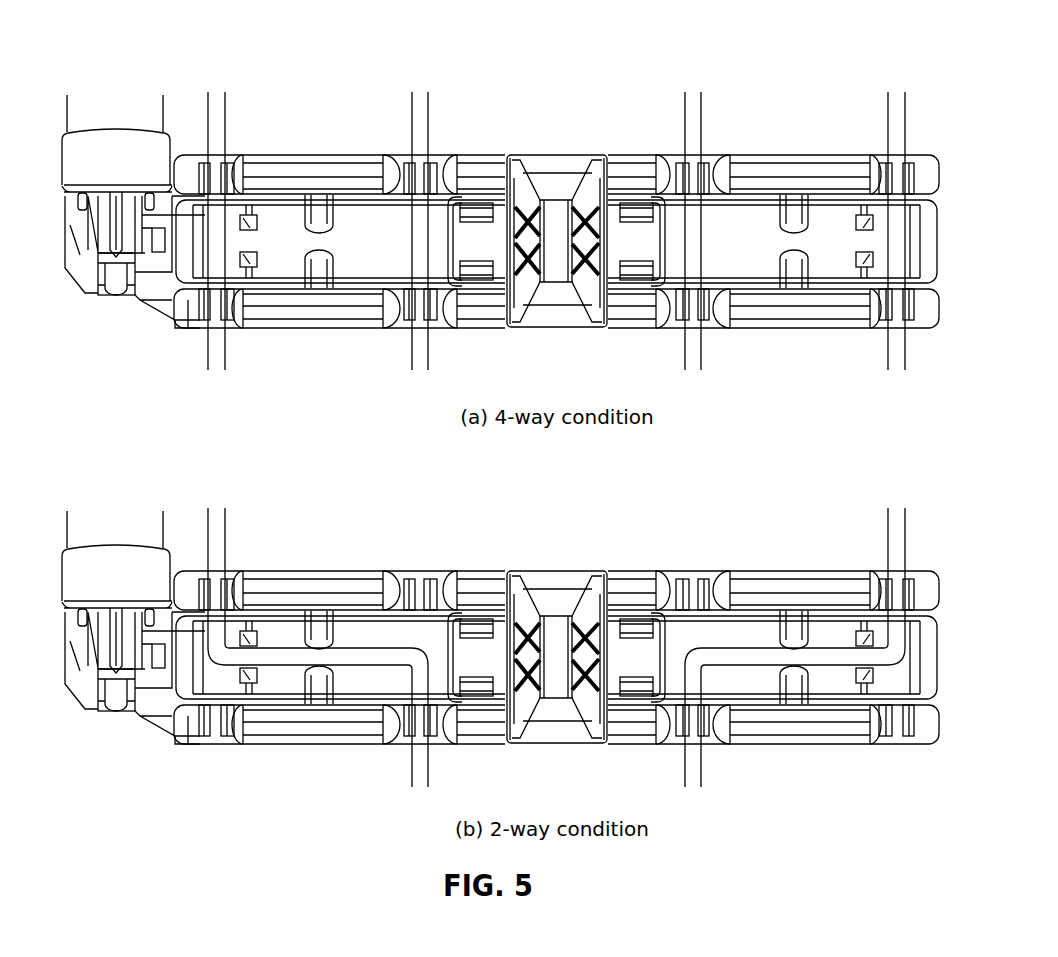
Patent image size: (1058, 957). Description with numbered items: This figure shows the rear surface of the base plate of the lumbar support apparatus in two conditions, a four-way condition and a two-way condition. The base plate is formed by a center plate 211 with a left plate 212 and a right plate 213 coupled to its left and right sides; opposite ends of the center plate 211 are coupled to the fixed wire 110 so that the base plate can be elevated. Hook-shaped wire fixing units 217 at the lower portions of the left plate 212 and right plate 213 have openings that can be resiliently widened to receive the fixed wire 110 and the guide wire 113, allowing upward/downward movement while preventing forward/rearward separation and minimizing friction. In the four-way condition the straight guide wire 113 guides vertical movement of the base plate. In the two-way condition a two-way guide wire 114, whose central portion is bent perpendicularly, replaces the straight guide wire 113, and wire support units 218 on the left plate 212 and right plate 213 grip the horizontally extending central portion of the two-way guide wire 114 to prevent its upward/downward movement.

The fixed wire 110 is at (224, 128).
The guide wire 113 is at (417, 112).
The two-way guide wire 114 is at (375, 655).
The center plate 211 is at (602, 155).
The left plate 212 is at (748, 155).
The right plate 213 is at (318, 155).
The wire fixing unit 217 is at (433, 158).
The wire support unit 218 is at (333, 217).